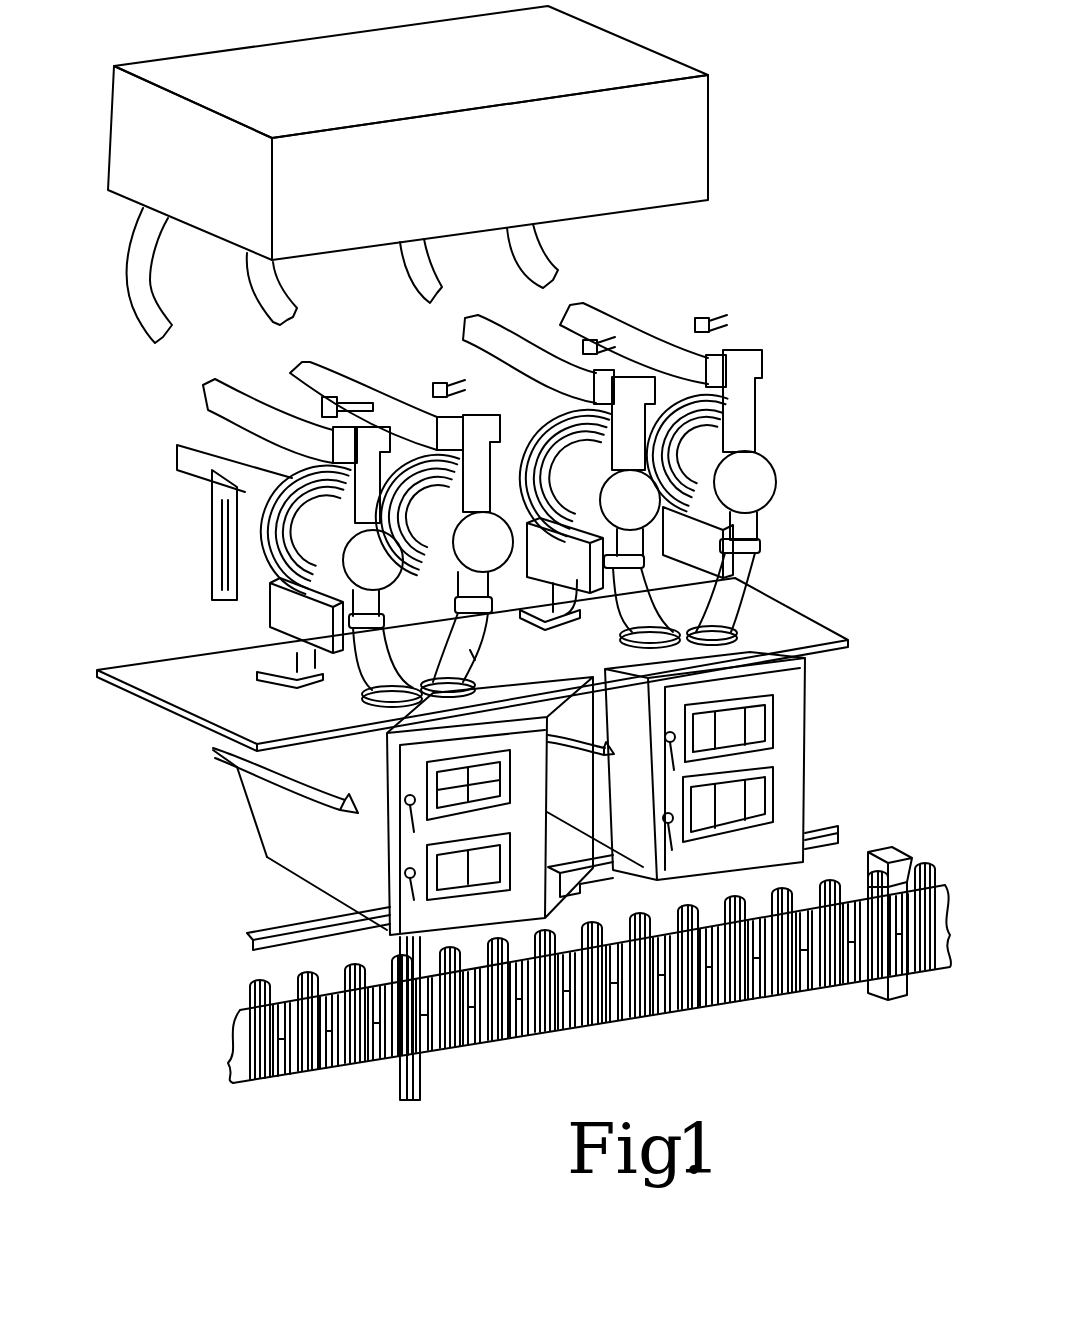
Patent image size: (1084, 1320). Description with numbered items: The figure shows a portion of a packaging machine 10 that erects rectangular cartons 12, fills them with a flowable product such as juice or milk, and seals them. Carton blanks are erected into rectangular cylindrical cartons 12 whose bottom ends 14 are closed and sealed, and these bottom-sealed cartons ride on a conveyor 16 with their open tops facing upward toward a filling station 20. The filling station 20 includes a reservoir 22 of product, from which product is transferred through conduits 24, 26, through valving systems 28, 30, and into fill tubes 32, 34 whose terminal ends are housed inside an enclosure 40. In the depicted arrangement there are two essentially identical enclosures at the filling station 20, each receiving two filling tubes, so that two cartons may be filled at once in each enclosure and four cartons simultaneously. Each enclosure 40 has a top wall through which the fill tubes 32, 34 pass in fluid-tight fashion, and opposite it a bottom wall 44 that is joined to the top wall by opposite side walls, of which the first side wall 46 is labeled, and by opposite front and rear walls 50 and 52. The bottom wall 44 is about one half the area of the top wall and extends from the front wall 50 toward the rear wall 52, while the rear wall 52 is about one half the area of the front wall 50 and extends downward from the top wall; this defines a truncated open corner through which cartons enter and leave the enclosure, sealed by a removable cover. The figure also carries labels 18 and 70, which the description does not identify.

The packaging machine 10 is at (168, 754).
The rectangular cartons 12 is at (903, 987).
The bottom ends 14 is at (897, 1000).
The conveyor 16 is at (447, 1057).
The support rail 18 is at (285, 993).
The filling station 20 is at (278, 623).
The reservoir 22 is at (708, 148).
The conduit 24 is at (240, 412).
The conduit 26 is at (330, 380).
The valving system 28 is at (270, 560).
The valving system 30 is at (408, 473).
The fill tube 32 is at (353, 670).
The fill tube 34 is at (473, 660).
The enclosure 40 is at (280, 853).
The bottom wall 44 is at (297, 877).
The first side wall 46 is at (333, 861).
The front wall 50 is at (513, 820).
The rear wall 52 is at (220, 745).
The conveyor 70 is at (603, 1020).